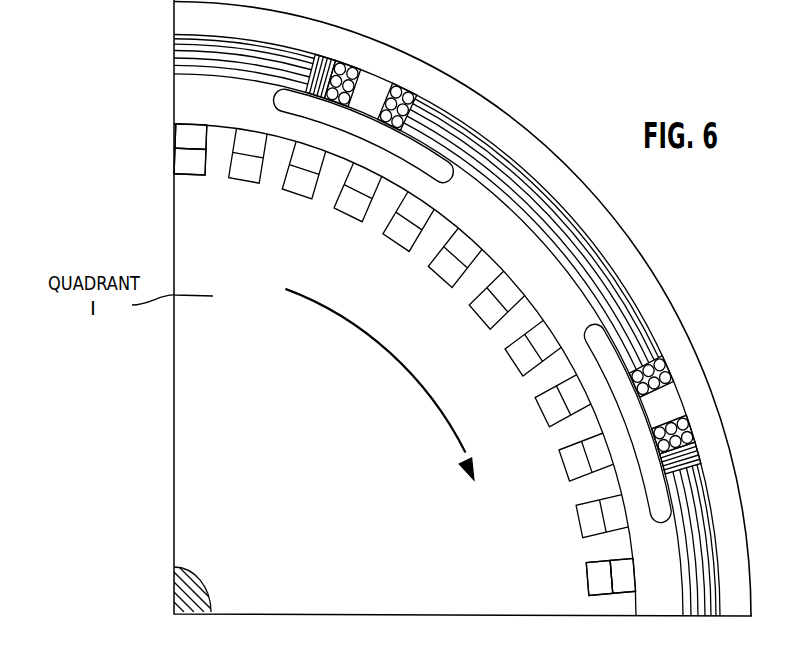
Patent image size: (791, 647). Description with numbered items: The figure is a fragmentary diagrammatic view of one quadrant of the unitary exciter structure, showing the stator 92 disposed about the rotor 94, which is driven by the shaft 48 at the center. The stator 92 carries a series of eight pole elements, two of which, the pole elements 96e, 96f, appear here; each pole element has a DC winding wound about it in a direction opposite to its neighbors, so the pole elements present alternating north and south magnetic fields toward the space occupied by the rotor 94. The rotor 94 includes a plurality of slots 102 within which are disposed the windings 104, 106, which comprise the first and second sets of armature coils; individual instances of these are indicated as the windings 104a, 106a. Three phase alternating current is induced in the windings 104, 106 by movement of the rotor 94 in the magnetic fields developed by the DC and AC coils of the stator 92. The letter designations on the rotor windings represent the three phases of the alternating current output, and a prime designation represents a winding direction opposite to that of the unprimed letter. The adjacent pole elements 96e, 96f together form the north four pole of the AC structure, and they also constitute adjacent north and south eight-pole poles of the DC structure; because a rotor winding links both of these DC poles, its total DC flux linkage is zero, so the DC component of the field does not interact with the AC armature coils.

The shaft 48 is at (192, 571).
The stator 92 is at (352, 61).
The rotor 94 is at (308, 490).
The pole element 96e is at (449, 180).
The pole element 96f is at (592, 334).
The slots 102 is at (195, 174).
The windings 104 is at (628, 584).
The outer coil section 104a is at (185, 125).
The windings 106 is at (620, 593).
The inner coil section 106a is at (185, 158).